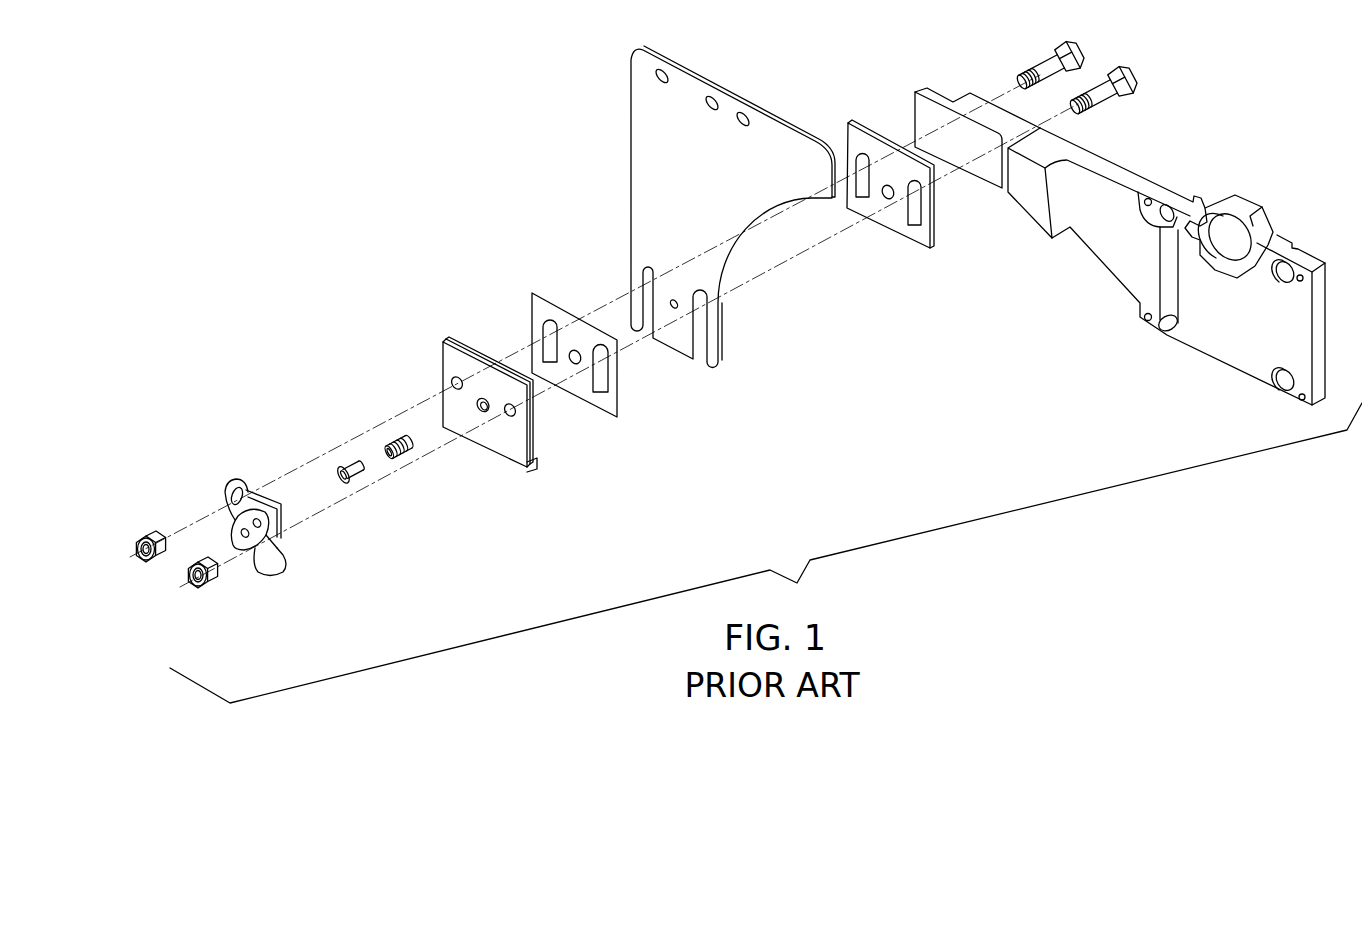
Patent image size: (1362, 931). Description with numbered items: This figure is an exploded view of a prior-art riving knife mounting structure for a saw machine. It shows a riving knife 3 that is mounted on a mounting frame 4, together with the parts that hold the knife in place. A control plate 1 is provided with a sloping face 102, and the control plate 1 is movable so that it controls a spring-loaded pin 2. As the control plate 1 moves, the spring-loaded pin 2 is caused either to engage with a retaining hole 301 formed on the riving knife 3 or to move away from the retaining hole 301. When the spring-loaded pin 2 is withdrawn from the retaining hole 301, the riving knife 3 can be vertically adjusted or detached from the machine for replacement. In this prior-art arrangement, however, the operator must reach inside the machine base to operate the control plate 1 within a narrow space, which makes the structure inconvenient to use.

The control plate 1 is at (282, 550).
The sloping face 102 is at (253, 549).
The spring-loaded pin 2 is at (350, 466).
The riving knife 3 is at (645, 138).
The retaining hole 301 is at (672, 309).
The mounting frame 4 is at (1125, 177).